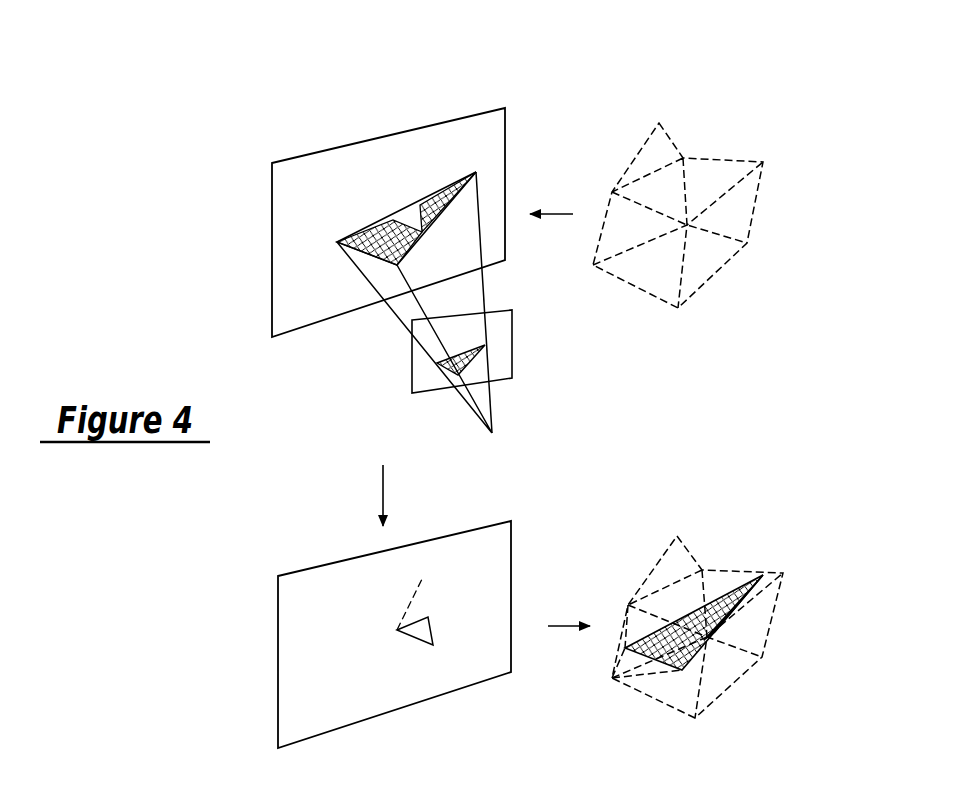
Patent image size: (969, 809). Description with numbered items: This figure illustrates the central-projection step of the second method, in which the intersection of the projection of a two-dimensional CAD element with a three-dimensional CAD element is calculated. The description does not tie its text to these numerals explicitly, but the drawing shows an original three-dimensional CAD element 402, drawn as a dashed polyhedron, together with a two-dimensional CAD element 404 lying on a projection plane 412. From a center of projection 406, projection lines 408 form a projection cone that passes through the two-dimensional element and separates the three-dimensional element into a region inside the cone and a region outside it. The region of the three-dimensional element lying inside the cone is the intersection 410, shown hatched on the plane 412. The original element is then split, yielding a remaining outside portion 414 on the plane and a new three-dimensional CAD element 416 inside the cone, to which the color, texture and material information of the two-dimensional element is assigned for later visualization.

The original 3D object (dashed polyhedron) 402 is at (733, 277).
The image plane with projected triangle 404 is at (473, 361).
The center of projection (eye point) 406 is at (492, 433).
The projection line 408 is at (482, 282).
The hatched triangle (selected surface) 410 is at (430, 195).
The projection plane 412 is at (395, 132).
The reprojected triangle on plane 414 is at (402, 646).
The selected triangle mapped back onto 3D object 416 is at (741, 566).